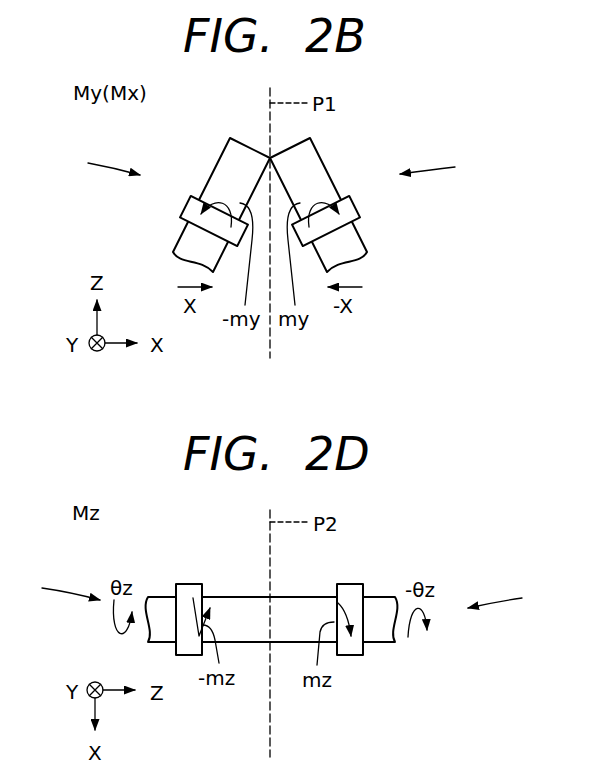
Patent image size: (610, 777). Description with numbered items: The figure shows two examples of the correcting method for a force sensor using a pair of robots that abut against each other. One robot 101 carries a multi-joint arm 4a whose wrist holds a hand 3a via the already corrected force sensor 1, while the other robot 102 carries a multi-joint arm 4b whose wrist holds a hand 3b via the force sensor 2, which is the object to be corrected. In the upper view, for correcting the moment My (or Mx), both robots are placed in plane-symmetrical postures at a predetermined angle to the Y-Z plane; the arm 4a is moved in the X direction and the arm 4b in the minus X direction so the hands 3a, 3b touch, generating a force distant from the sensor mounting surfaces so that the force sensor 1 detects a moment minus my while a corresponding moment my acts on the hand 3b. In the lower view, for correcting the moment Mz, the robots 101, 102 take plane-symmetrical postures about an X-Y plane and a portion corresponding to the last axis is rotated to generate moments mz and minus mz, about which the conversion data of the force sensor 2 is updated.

In FIG. 2B, the force sensor 1 is at (190, 202).
In FIG. 2D, the force sensor 1 is at (190, 583).
In FIG. 2B, the force sensor 2 is at (352, 207).
In FIG. 2D, the force sensor 2 is at (348, 583).
In FIG. 2B, the hand 3a is at (222, 155).
In FIG. 2D, the hand 3a is at (237, 596).
In FIG. 2B, the hand 3b is at (320, 154).
In FIG. 2D, the hand 3b is at (305, 596).
In FIG. 2B, the multi-joint arm 4a is at (187, 229).
In FIG. 2D, the multi-joint arm 4a is at (163, 596).
In FIG. 2B, the multi-joint arm 4b is at (357, 240).
In FIG. 2D, the multi-joint arm 4b is at (385, 596).
In FIG. 2B, the robot 101 is at (95, 164).
In FIG. 2D, the robot 101 is at (52, 591).
In FIG. 2B, the robot 102 is at (447, 166).
In FIG. 2D, the robot 102 is at (516, 598).